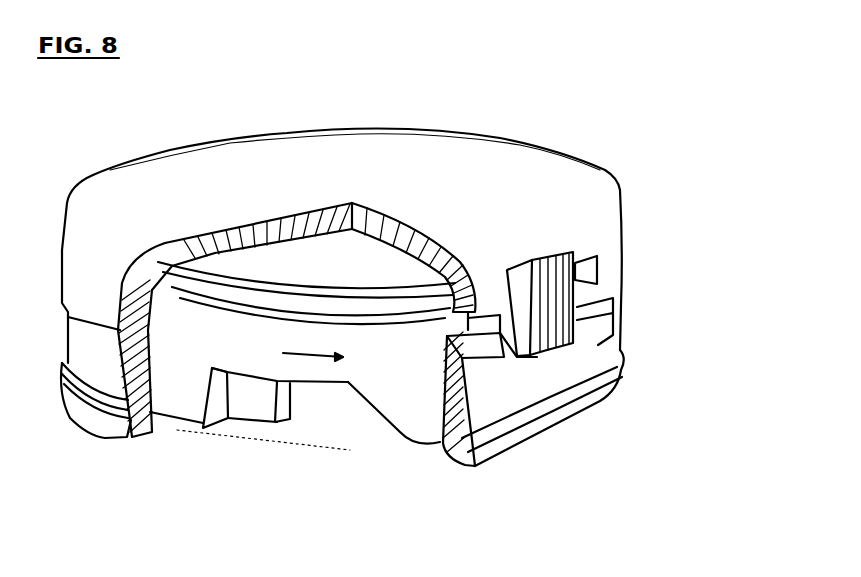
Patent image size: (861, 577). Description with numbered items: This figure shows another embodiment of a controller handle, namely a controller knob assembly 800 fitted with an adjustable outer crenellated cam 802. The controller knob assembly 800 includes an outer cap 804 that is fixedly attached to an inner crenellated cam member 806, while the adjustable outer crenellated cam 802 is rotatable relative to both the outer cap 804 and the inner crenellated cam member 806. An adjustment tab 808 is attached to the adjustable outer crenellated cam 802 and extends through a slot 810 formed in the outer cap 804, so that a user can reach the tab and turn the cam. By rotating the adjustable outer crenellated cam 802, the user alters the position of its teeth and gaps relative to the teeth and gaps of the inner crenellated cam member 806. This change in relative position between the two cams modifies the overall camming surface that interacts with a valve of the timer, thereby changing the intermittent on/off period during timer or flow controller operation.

The controller knob assembly 800 is at (497, 504).
The adjustable outer crenellated cam 802 is at (403, 348).
The outer cap 804 is at (312, 287).
The inner crenellated cam member 806 is at (438, 233).
The adjustment tab 808 is at (613, 298).
The slot 810 is at (583, 273).